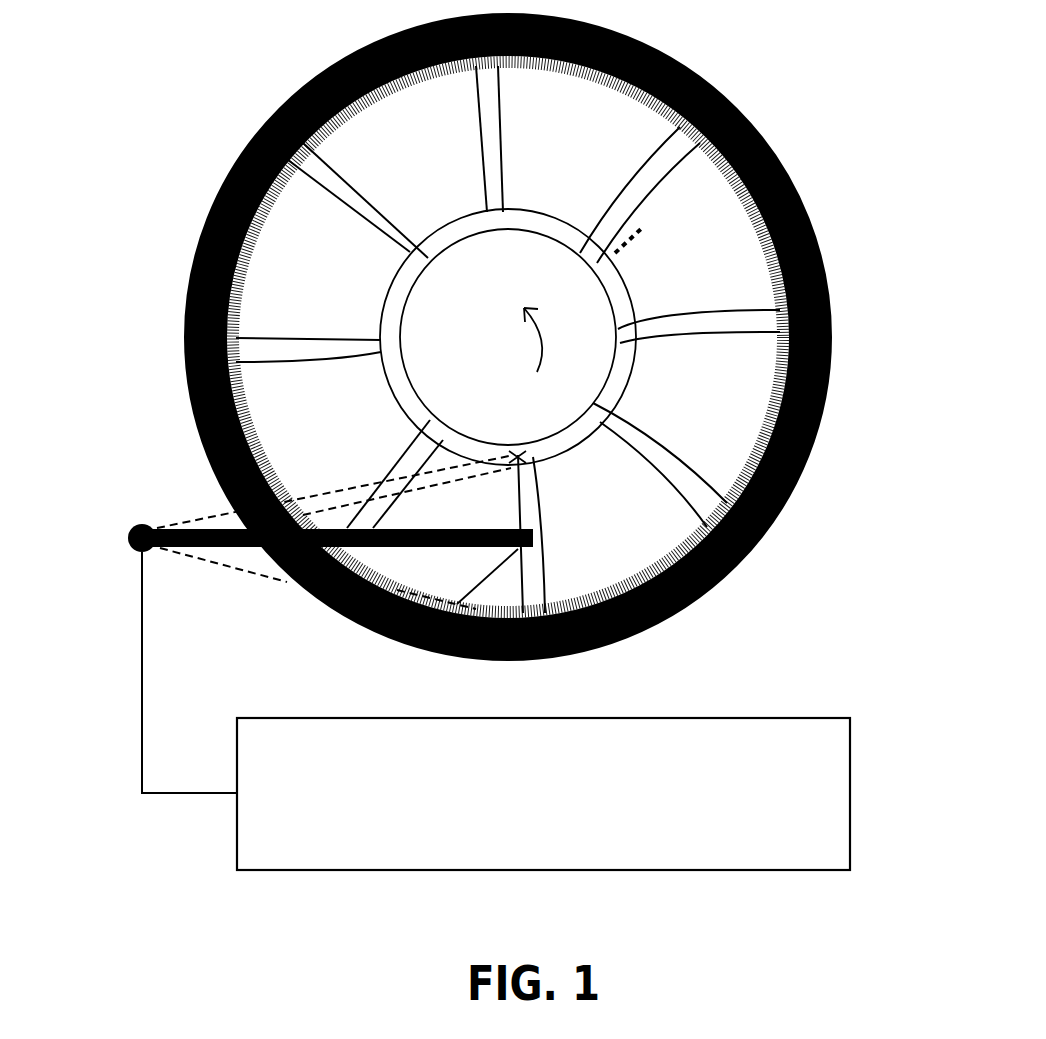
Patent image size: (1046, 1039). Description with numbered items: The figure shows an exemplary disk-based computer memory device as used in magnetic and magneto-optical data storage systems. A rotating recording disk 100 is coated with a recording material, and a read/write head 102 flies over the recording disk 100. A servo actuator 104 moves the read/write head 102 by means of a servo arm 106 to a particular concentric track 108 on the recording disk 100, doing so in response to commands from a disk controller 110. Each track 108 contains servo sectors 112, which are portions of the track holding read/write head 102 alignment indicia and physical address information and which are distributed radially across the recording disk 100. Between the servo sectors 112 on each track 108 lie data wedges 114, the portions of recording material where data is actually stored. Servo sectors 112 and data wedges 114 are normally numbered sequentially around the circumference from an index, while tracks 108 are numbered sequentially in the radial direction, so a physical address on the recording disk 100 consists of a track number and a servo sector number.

The recording disk 100 is at (557, 320).
The read/write head 102 is at (397, 643).
The servo actuator 104 is at (130, 527).
The servo arm 106 is at (213, 527).
The concentric track 108 is at (600, 25).
The disk controller 110 is at (642, 716).
The servo sector 112 is at (828, 312).
The data wedge 114 is at (830, 356).